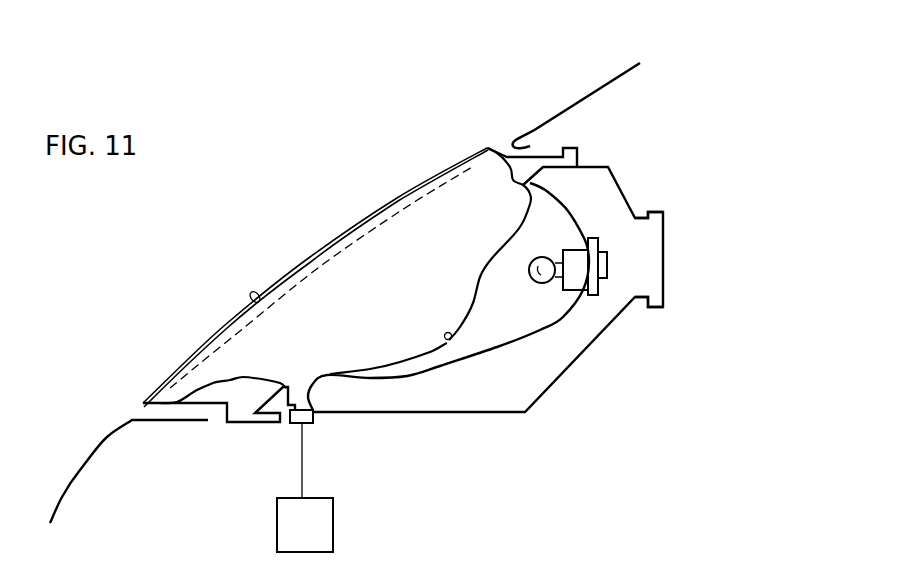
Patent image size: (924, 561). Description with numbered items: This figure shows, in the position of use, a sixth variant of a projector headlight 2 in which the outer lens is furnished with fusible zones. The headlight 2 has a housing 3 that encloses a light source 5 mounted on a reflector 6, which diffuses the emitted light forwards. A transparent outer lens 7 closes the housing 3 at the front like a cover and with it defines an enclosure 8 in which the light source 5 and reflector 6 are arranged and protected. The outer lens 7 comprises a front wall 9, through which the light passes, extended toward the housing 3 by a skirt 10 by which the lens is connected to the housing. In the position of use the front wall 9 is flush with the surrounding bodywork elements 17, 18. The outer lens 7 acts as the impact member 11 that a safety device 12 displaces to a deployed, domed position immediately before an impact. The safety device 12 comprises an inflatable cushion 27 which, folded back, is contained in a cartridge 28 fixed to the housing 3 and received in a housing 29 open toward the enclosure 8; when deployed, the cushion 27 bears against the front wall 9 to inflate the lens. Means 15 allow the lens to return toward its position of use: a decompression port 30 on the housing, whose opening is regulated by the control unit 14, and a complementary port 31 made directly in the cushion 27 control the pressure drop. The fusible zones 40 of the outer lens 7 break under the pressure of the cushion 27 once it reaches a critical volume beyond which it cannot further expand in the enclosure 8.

The projector headlight 2 is at (488, 452).
The housing 3 is at (622, 192).
The light source 5 is at (535, 257).
The reflector 6 is at (530, 345).
The outer lens 7 is at (357, 211).
The enclosure 8 is at (429, 306).
The front wall 9 is at (308, 255).
The skirt 10 is at (540, 152).
The impact member 11 is at (369, 218).
The safety device 12 is at (323, 442).
The control unit 14 is at (317, 536).
The means for allowing displacement 15 is at (637, 212).
The bodywork element 17 is at (78, 480).
The bodywork element 18 is at (590, 88).
The inflatable cushion 27 is at (258, 288).
The cartridge 28 is at (293, 423).
The housing 29 is at (323, 423).
The decompression port 30 is at (649, 302).
The complementary port 31 is at (451, 338).
The fusible zones 40 is at (503, 138).